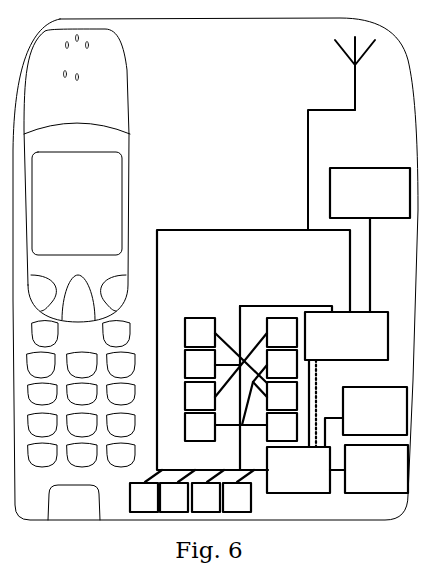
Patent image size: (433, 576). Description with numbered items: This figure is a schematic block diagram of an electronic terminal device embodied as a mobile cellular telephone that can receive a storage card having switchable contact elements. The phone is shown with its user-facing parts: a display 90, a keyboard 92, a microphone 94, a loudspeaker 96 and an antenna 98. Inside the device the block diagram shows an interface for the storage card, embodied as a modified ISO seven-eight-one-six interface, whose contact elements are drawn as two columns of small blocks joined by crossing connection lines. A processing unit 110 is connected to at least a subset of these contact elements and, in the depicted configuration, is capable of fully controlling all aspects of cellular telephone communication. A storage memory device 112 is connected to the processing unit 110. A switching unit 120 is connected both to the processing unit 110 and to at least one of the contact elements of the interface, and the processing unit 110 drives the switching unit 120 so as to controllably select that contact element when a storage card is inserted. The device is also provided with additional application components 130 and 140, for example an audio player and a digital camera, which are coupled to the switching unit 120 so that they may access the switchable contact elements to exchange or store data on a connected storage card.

The display 90 is at (157, 230).
The keyboard 92 is at (157, 328).
The microphone 94 is at (157, 447).
The loudspeaker 96 is at (243, 230).
The antenna 98 is at (341, 133).
The processing unit 110 is at (346, 336).
The storage memory device 112 is at (370, 240).
The switching unit 120 is at (298, 470).
The additional application component 130 is at (366, 417).
The additional application component 140 is at (369, 469).